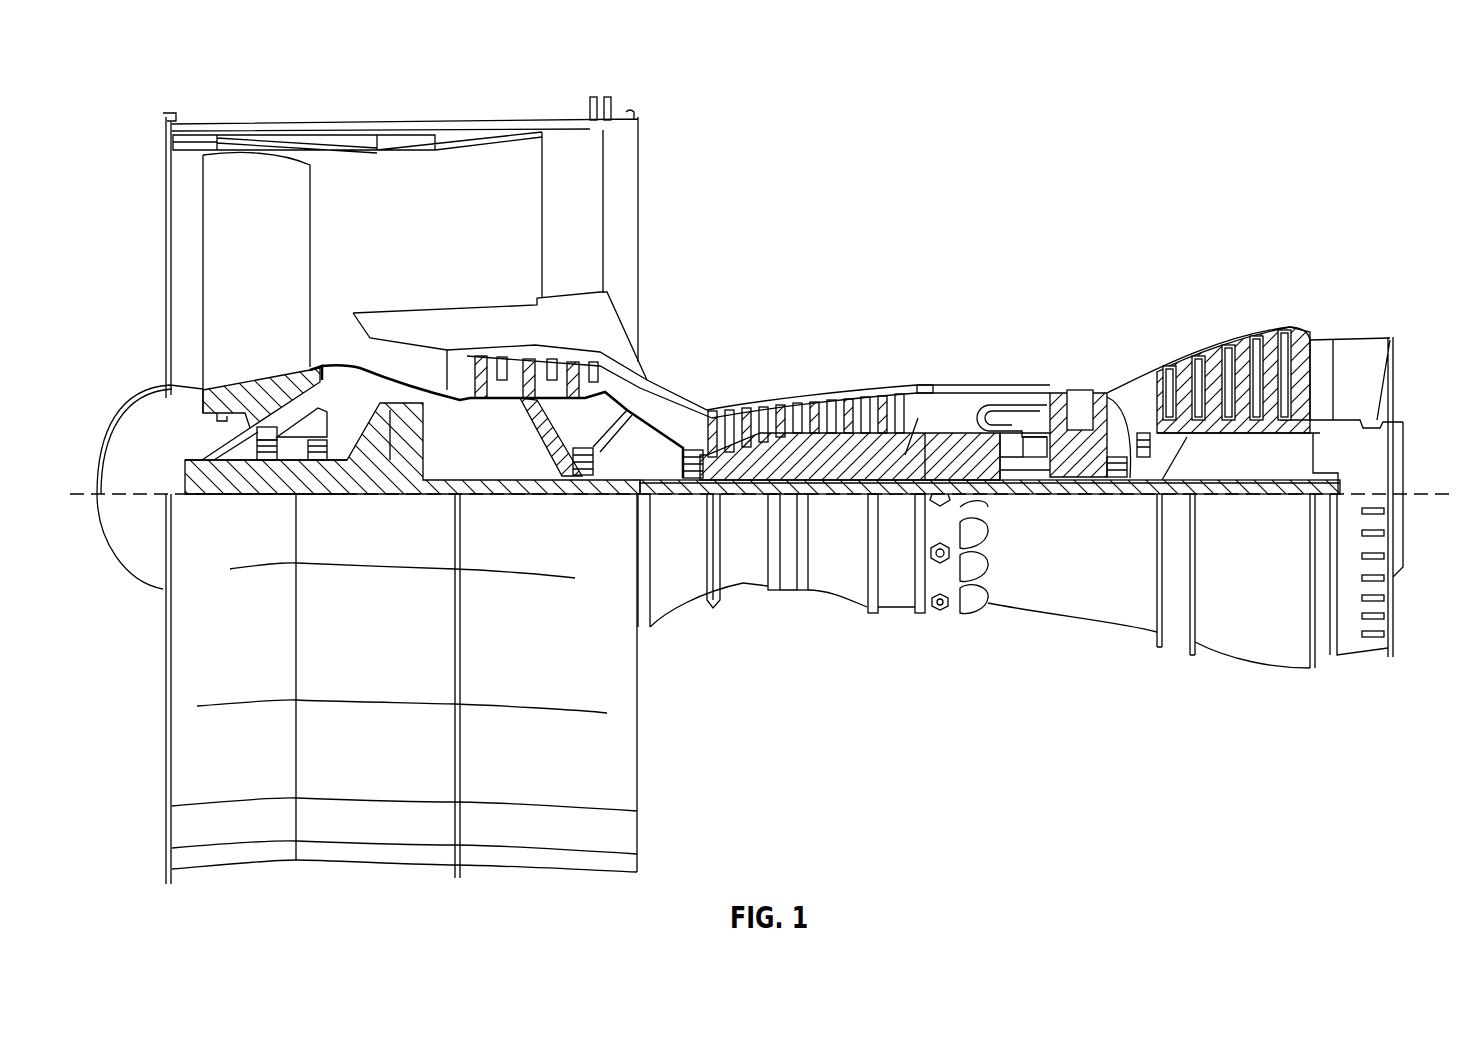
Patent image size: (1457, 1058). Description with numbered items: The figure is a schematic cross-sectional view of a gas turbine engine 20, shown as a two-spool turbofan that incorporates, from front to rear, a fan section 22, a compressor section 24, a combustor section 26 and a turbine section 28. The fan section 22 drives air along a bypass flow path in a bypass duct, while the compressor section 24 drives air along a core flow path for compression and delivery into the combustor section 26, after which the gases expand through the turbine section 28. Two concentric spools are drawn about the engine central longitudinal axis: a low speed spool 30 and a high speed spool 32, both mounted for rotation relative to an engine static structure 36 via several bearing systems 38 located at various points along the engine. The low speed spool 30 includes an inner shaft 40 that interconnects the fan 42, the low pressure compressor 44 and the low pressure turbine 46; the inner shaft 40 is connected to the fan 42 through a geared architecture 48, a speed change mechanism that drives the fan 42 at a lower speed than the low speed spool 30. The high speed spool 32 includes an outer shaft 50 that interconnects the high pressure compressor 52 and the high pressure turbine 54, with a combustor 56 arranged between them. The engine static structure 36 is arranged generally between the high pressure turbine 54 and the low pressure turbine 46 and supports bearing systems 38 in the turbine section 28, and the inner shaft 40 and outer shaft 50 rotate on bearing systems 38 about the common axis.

The gas turbine engine 20 is at (1213, 160).
The fan section 22 is at (270, 114).
The compressor section 24 is at (830, 348).
The combustor section 26 is at (994, 348).
The turbine section 28 is at (1142, 328).
The low speed spool 30 is at (860, 500).
The high speed spool 32 is at (912, 450).
The engine static structure 36 is at (898, 612).
The bearing systems 38 is at (258, 462).
The inner shaft 40 is at (650, 490).
The fan 42 is at (281, 252).
The low pressure compressor 44 is at (553, 372).
The low pressure turbine 46 is at (1247, 355).
The geared architecture 48 is at (400, 465).
The outer shaft 50 is at (1024, 470).
The high pressure compressor 52 is at (820, 460).
The high pressure turbine 54 is at (1082, 393).
The combustor 56 is at (1003, 412).